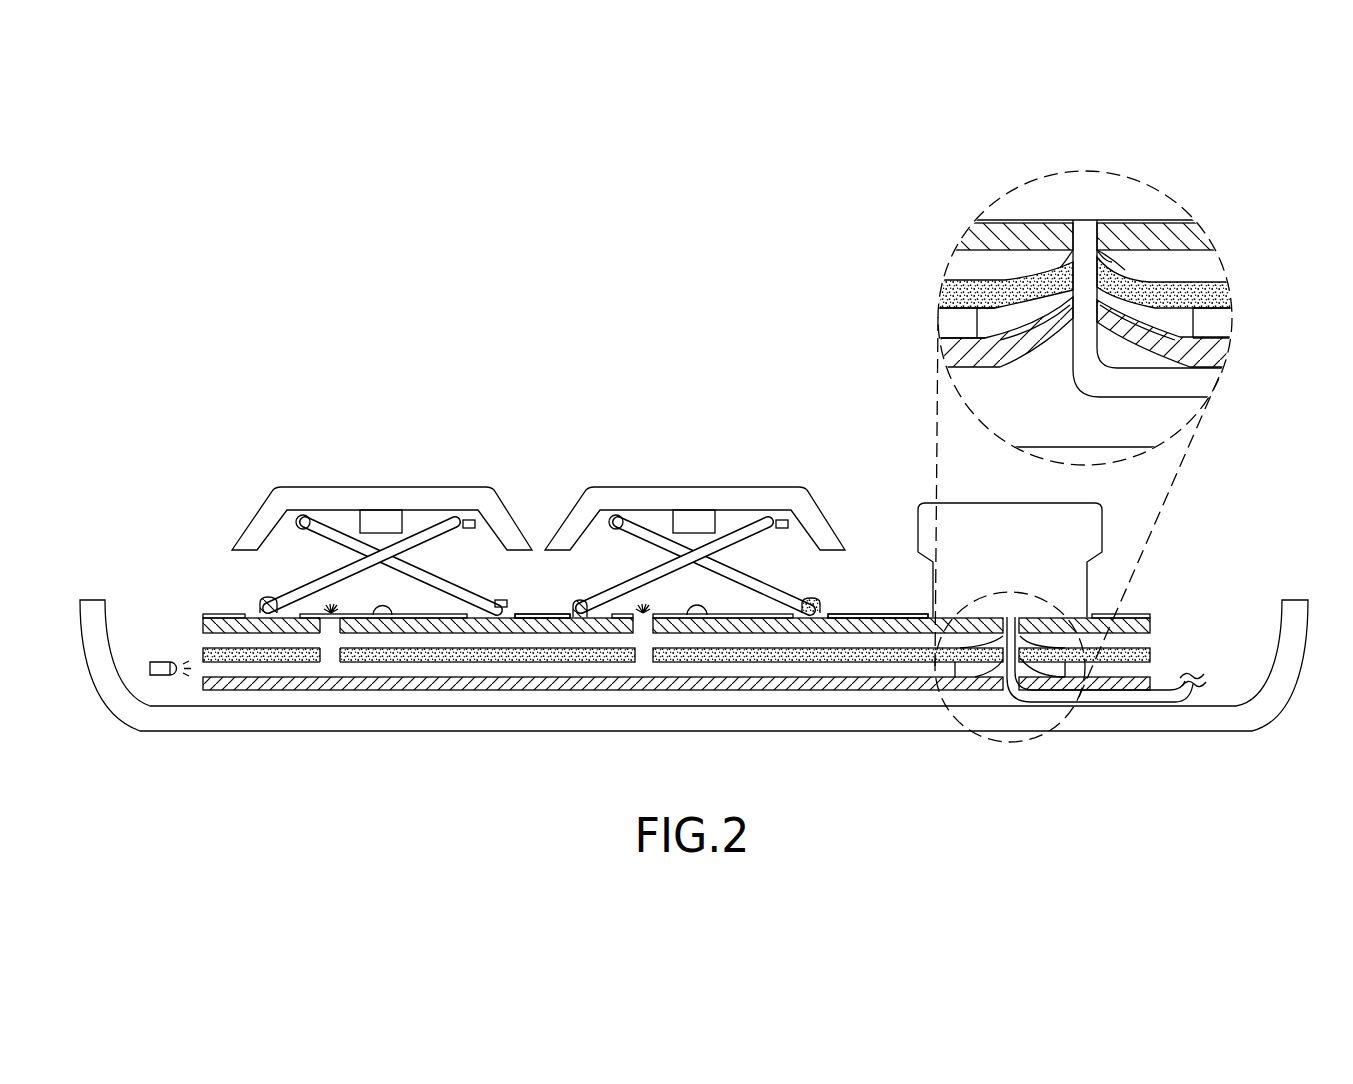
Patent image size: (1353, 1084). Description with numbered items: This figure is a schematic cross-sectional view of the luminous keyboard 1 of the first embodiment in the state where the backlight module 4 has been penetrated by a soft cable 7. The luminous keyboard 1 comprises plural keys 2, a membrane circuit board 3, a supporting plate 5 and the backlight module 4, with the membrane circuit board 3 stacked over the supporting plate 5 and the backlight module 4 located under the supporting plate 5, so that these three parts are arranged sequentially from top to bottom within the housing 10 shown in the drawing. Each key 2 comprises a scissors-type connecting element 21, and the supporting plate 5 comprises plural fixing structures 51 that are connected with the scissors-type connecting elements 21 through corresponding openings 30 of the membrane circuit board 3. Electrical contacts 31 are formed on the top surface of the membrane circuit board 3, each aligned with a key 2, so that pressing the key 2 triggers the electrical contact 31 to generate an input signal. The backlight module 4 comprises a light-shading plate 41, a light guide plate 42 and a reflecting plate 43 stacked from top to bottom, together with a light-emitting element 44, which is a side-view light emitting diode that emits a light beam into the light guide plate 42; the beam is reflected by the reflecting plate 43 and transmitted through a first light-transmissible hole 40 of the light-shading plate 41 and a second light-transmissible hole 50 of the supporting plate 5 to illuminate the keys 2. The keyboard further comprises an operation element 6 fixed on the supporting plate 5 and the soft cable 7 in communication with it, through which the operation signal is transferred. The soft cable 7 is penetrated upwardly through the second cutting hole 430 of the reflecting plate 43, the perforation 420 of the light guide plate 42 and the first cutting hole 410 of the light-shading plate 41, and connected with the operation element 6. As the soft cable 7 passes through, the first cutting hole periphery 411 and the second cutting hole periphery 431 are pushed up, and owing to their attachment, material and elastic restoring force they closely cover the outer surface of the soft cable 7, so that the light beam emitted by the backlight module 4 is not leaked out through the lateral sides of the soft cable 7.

The luminous keyboard 1 is at (331, 438).
The key 2 is at (651, 497).
The membrane circuit board 3 is at (228, 615).
The backlight module 4 is at (155, 425).
The supporting plate 5 is at (1143, 618).
The operation element 6 is at (1008, 523).
The soft cable 7 is at (1047, 697).
The housing 10 is at (223, 718).
The scissors-type connecting element 21 is at (648, 580).
The opening 30 is at (569, 604).
The electrical contact 31 is at (698, 606).
The first light-transmissible hole 40 is at (652, 647).
The light-shading plate 41 is at (1180, 620).
The light guide plate 42 is at (1225, 747).
The reflecting plate 43 is at (1180, 747).
The light-emitting element 44 is at (96, 727).
The second light-transmissible hole 50 is at (636, 624).
The fixing structure 51 is at (568, 597).
The first cutting hole 410 is at (1060, 268).
The first cutting hole periphery 411 is at (1112, 262).
The perforation 420 is at (1191, 329).
The second cutting hole 430 is at (1060, 318).
The second cutting hole periphery 431 is at (1127, 315).